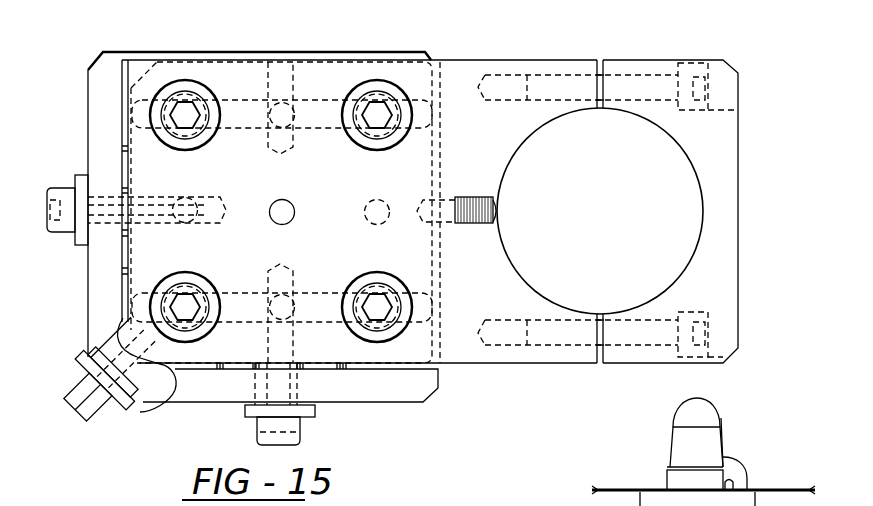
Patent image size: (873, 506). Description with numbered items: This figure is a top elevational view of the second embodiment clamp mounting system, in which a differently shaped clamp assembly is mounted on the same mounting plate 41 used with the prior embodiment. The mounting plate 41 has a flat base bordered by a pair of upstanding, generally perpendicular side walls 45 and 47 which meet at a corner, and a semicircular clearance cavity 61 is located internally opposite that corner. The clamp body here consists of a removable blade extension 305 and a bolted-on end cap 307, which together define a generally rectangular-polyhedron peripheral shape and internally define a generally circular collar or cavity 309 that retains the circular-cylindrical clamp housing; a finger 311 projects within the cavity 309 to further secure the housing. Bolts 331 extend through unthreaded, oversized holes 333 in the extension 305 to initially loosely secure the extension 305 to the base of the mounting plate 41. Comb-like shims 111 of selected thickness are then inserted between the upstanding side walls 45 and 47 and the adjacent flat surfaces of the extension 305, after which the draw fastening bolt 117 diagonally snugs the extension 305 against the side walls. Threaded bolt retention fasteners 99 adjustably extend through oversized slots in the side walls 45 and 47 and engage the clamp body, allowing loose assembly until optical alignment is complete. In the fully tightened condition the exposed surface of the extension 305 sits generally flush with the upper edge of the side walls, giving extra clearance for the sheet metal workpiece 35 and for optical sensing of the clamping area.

The mounting plate 41 is at (182, 52).
The side wall 47 is at (100, 168).
The comb-like shim 111 is at (125, 163).
The side wall 45 is at (393, 390).
The bolt 331 is at (378, 108).
The oversized hole 333 is at (358, 97).
The bolt retention fastener 99 is at (65, 228).
The blade extension 305 is at (457, 80).
The end cap 307 is at (718, 135).
The collar cavity 309 is at (693, 250).
The finger 311 is at (497, 210).
The draw fastening bolt 117 is at (108, 410).
The clearance cavity 61 is at (175, 374).
The workpiece 35 is at (777, 488).